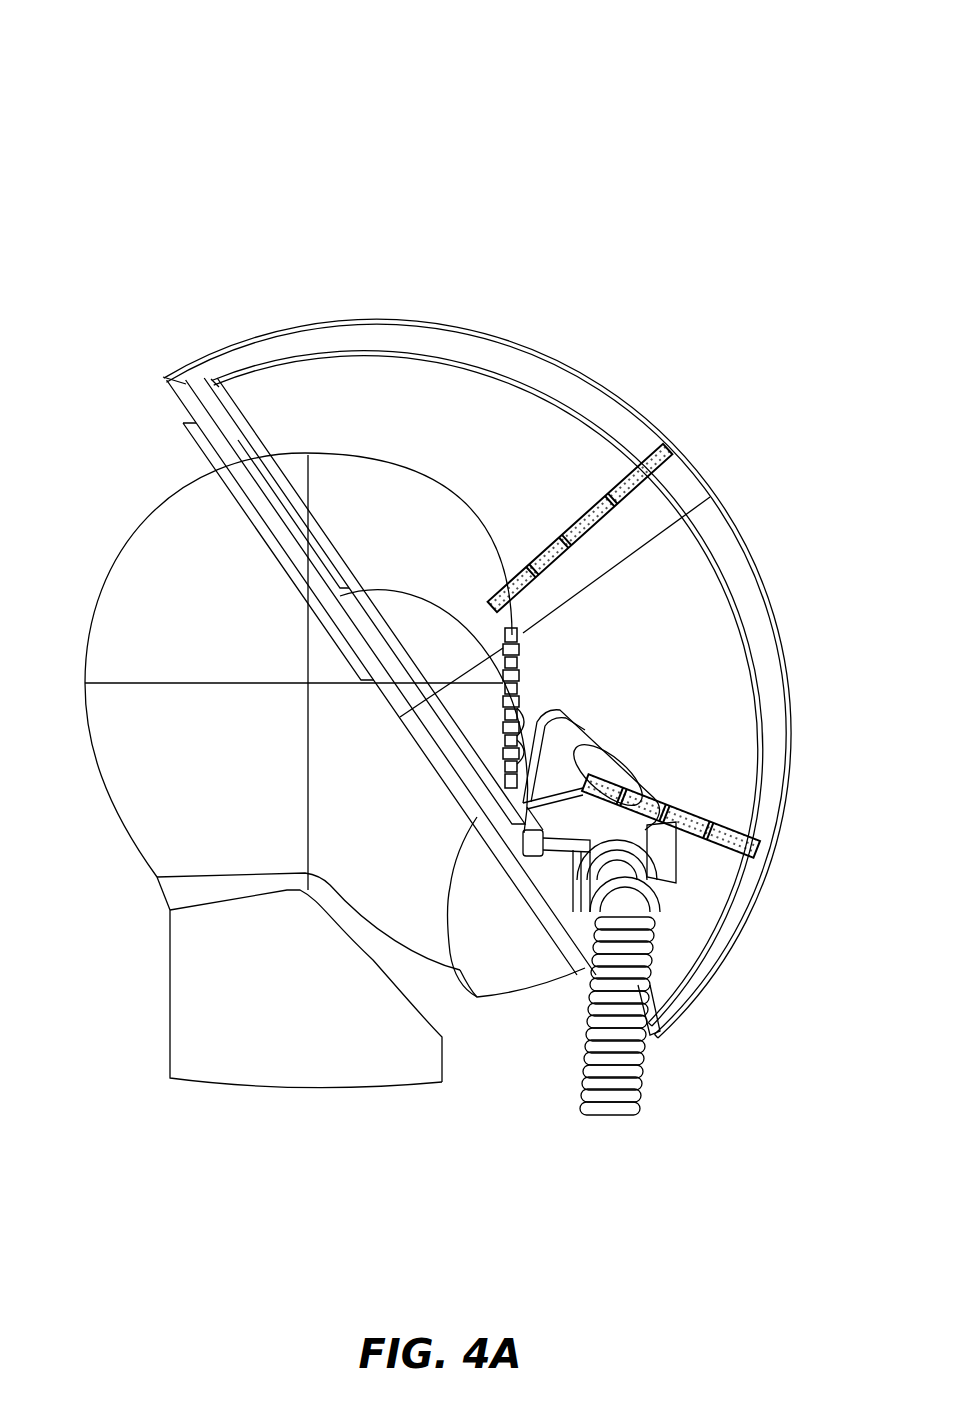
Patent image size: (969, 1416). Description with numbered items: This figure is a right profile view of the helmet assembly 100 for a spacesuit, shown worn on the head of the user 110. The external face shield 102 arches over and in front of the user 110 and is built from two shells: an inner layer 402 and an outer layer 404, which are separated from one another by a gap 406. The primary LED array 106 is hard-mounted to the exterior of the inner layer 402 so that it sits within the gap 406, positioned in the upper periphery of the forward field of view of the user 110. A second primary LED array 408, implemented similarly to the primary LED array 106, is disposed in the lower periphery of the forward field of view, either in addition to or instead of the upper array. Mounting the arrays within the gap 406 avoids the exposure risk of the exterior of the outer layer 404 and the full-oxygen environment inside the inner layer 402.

The helmet assembly 100 is at (72, 61).
The external face shield 102 is at (784, 535).
The primary LED array 106 is at (643, 467).
The user 110 is at (190, 550).
The inner layer 402 is at (397, 355).
The outer layer 404 is at (460, 327).
The gap 406 is at (510, 367).
The primary LED array 408 is at (740, 820).